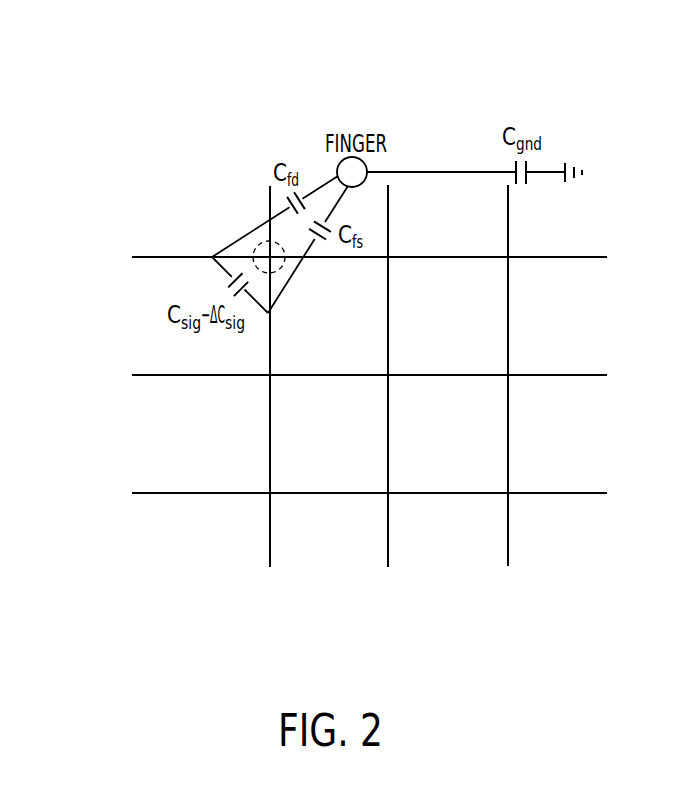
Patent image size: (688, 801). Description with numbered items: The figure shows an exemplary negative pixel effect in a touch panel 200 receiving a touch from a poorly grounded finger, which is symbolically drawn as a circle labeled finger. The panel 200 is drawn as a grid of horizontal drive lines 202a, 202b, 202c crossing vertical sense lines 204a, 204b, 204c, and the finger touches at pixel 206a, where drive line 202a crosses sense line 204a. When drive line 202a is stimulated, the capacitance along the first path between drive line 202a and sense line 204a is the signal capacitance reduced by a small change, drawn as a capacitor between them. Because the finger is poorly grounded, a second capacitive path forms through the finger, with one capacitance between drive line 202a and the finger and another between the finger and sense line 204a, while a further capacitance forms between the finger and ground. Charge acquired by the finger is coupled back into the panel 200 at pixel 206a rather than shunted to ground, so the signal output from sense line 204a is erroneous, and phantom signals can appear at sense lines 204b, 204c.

The touch panel 200 is at (110, 101).
The drive line 202a is at (151, 257).
The drive line 202b is at (150, 375).
The drive line 202c is at (151, 493).
The sense line 204a is at (271, 554).
The sense line 204b is at (389, 554).
The sense line 204c is at (509, 551).
The pixel 206a is at (279, 270).